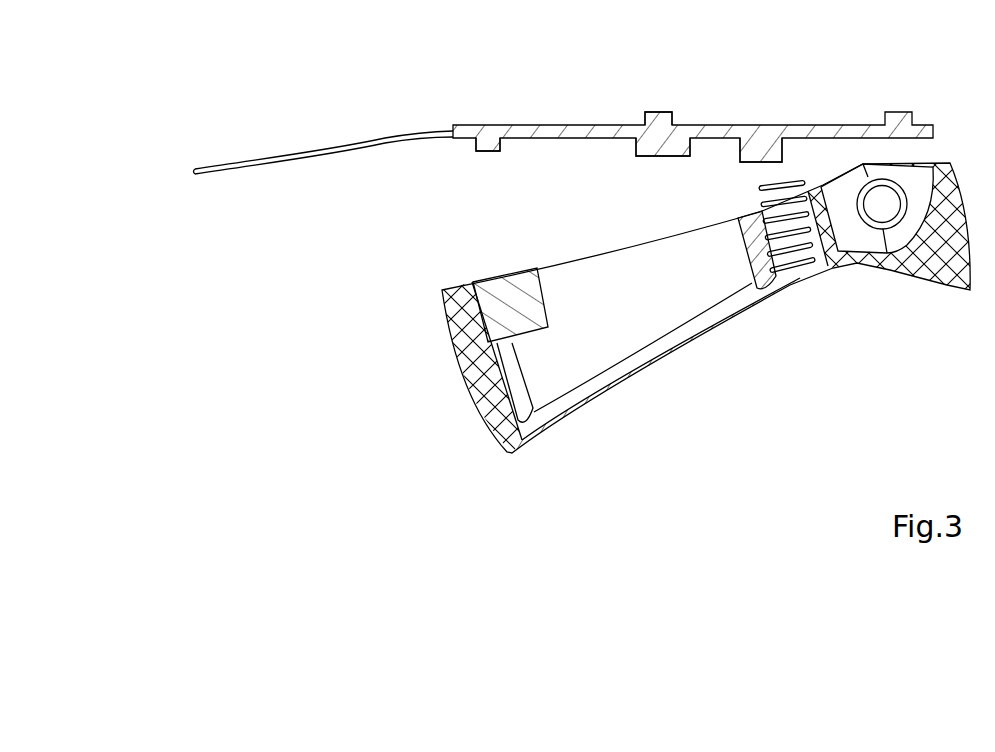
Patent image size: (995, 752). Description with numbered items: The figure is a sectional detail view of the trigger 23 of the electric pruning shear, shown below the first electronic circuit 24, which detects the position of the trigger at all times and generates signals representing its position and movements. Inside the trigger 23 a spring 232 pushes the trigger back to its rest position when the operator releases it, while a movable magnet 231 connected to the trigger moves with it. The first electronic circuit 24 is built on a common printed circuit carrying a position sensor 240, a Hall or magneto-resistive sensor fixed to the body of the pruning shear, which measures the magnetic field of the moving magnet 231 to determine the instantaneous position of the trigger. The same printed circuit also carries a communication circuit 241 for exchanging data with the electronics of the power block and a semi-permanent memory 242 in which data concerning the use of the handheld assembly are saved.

The first electronic circuit 24 is at (580, 123).
The position sensor 240 is at (485, 148).
The communication circuit 241 is at (670, 128).
The semi-permanent memory 242 is at (763, 156).
The trigger 23 is at (706, 308).
The movable magnet 231 is at (530, 332).
The spring 232 is at (812, 272).